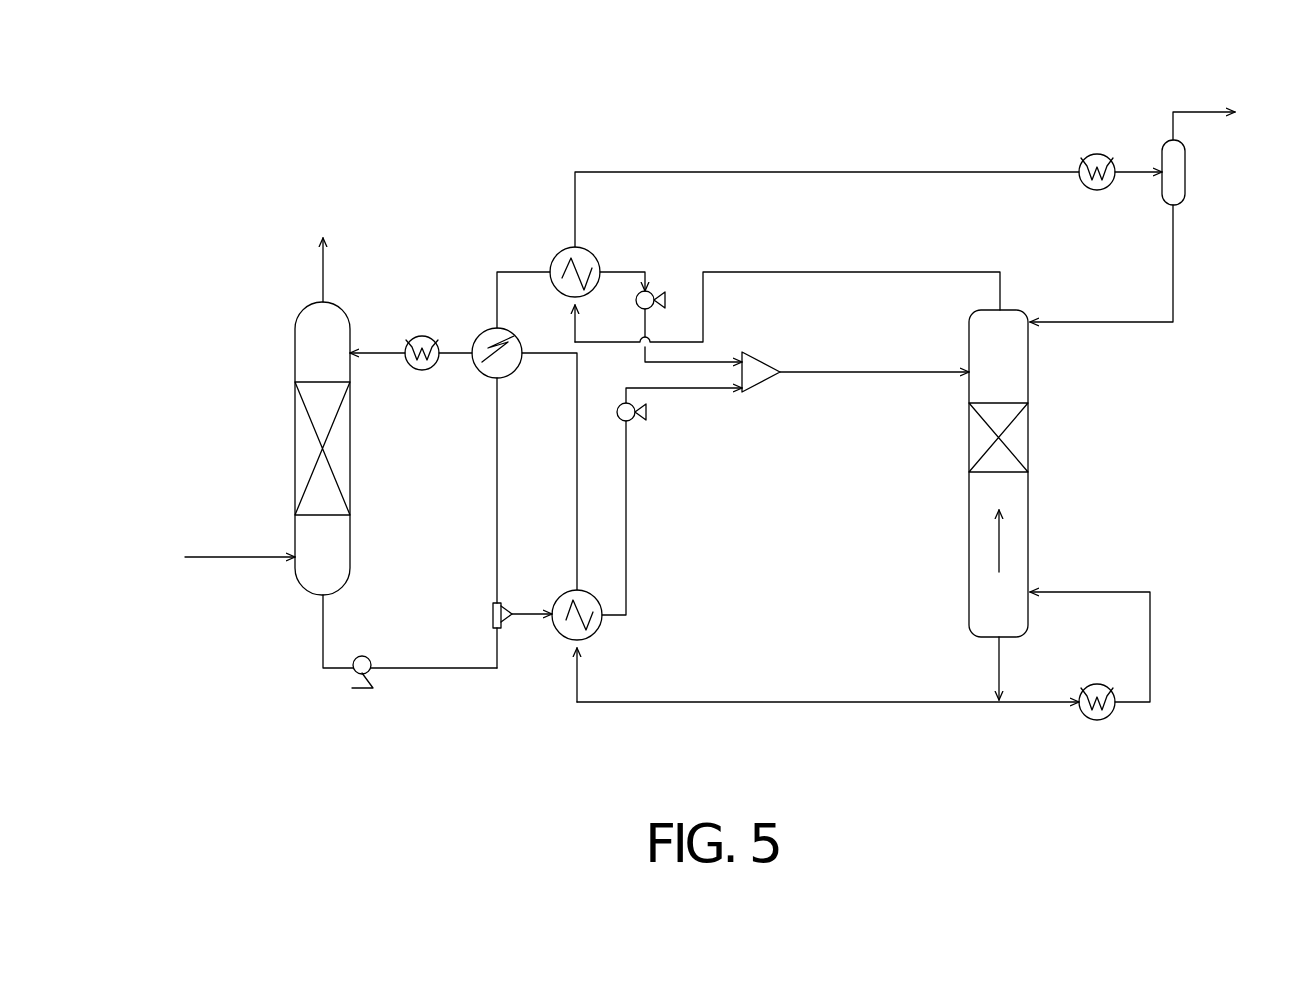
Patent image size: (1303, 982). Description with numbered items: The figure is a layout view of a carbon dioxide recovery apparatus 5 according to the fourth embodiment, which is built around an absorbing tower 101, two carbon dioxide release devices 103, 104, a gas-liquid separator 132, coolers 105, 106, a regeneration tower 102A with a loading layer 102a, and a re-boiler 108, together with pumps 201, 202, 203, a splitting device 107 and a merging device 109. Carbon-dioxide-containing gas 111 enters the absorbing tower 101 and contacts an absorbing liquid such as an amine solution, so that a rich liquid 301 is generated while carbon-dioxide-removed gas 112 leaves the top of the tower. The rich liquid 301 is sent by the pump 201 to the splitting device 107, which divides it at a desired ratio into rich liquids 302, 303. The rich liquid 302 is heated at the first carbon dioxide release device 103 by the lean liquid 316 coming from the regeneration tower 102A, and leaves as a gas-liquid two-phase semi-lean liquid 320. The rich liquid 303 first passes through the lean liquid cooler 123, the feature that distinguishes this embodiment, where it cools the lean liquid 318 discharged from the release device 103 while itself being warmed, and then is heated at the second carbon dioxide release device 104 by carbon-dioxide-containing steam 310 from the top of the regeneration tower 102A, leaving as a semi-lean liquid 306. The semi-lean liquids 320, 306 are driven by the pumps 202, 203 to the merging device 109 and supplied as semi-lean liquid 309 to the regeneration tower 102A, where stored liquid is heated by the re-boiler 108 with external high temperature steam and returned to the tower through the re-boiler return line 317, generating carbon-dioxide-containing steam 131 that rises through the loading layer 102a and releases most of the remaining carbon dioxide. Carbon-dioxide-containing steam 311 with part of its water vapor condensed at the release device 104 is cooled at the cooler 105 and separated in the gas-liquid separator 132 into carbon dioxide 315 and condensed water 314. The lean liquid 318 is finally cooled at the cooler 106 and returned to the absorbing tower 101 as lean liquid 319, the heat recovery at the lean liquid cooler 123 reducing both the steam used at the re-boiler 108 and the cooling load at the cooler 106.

The carbon dioxide recovery apparatus 5 is at (423, 185).
The absorbing tower 101 is at (295, 372).
The regeneration tower 102A is at (1030, 480).
The loading layer 102a is at (1020, 432).
The carbon dioxide release device 103 is at (598, 638).
The carbon dioxide release device 104 is at (555, 255).
The cooler 105 is at (1093, 154).
The cooler 106 is at (425, 337).
The splitting device 107 is at (493, 610).
The re-boiler 108 is at (1082, 710).
The merging device 109 is at (765, 392).
The carbon-dioxide-containing gas 111 is at (217, 554).
The carbon-dioxide-removed gas 112 is at (320, 266).
The lean liquid cooler 123 is at (490, 330).
The carbon-dioxide-containing steam 131 is at (1000, 548).
The gas-liquid separator 132 is at (1187, 155).
The pump 201 is at (370, 690).
The pump 202 is at (638, 422).
The pump 203 is at (650, 291).
The rich liquid 301 is at (345, 667).
The rich liquid 302 is at (545, 622).
The rich liquid 303 is at (497, 482).
The semi-lean liquid 306 is at (625, 272).
The semi-lean liquid 309 is at (867, 373).
The carbon-dioxide-containing steam 310 is at (838, 272).
The carbon-dioxide-containing steam 311 is at (838, 172).
The condensed water 314 is at (1180, 243).
The carbon dioxide 315 is at (1180, 112).
The lean liquid 316 is at (823, 703).
The reboiler return line 317 is at (1132, 592).
The lean liquid 318 is at (578, 532).
The lean liquid 319 is at (390, 350).
The semi-lean liquid 320 is at (626, 543).